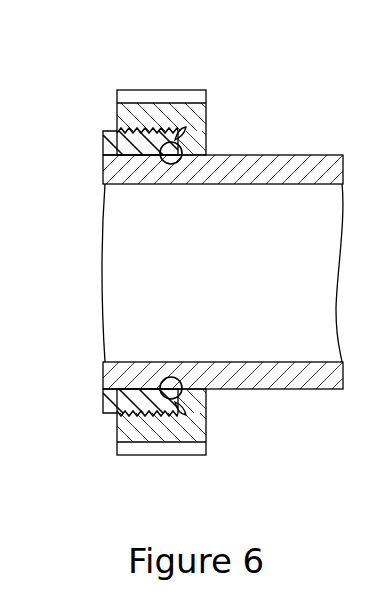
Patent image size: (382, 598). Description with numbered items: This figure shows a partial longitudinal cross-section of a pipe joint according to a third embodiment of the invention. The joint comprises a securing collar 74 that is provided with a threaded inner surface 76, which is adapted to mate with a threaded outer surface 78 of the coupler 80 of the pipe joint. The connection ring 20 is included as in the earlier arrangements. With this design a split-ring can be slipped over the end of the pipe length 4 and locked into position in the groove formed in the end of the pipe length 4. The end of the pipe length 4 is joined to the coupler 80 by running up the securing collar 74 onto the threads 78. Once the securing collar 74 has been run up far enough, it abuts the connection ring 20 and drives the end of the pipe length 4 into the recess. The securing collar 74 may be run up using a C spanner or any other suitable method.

The pipe length 4 is at (282, 390).
The connection ring 20 is at (173, 164).
The securing collar 74 is at (186, 90).
The threaded inner surface 76 is at (115, 428).
The threaded outer surface 78 is at (133, 128).
The coupler 80 is at (103, 140).